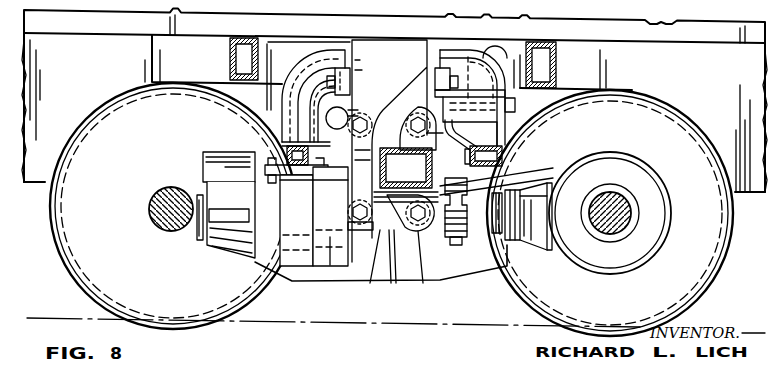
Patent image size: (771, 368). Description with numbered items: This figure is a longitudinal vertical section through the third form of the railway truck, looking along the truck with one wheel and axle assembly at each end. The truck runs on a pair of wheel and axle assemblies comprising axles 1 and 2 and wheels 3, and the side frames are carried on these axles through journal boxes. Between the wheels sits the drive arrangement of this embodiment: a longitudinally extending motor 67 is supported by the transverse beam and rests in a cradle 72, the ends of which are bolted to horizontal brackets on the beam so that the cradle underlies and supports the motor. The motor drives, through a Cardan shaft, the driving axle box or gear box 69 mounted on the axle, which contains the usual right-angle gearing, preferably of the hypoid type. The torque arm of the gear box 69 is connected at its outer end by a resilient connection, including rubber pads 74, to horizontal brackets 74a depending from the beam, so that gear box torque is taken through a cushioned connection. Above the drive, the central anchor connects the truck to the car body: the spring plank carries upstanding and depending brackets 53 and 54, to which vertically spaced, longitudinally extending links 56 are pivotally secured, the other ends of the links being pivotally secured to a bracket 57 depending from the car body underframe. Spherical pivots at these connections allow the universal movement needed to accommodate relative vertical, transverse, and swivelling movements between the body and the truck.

The axle 1 is at (621, 192).
The axle 2 is at (167, 189).
The wheels 3 is at (52, 239).
The upstanding bracket 53 is at (417, 117).
The depending bracket 54 is at (417, 228).
The links 56 is at (382, 231).
The bracket 57 is at (397, 151).
The motor 67 is at (330, 250).
The gear box 69 is at (618, 254).
The cradle 72 is at (314, 216).
The rubber pads 74 is at (440, 182).
The horizontal brackets 74a is at (471, 245).